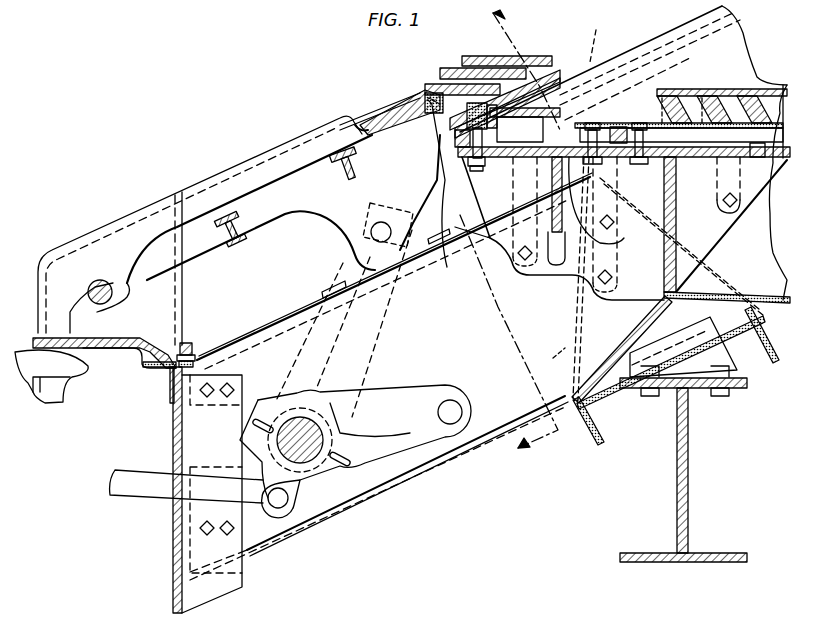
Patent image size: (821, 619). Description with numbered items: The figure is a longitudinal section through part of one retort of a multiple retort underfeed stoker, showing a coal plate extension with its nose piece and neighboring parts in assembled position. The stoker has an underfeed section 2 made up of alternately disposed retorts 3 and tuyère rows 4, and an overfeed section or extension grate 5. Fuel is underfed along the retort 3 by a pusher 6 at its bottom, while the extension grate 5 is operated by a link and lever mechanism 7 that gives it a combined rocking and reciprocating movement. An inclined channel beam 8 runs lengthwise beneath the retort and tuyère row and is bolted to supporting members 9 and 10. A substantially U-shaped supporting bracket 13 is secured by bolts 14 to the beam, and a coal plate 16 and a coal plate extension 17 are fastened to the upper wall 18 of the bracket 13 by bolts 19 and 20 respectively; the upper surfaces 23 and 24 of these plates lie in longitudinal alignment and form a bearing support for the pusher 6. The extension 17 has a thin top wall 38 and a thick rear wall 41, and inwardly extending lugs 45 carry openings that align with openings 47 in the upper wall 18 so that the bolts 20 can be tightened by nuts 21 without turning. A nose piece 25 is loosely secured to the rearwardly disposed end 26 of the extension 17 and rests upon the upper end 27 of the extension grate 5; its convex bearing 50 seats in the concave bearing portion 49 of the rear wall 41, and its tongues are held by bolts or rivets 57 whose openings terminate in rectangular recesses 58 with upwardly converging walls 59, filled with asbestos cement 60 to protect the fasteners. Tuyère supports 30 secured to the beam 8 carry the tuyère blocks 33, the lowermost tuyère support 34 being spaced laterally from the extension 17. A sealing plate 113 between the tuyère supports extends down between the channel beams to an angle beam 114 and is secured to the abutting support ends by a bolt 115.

The underfeed section 2 is at (708, 18).
The retort 3 is at (745, 58).
The tuyère row 4 is at (500, 56).
The extension grate 5 is at (181, 192).
The pusher 6 is at (752, 88).
The link and lever mechanism 7 is at (378, 400).
The inclined channel beam 8 is at (490, 432).
The supporting member 9 is at (175, 603).
The supporting member 10 is at (688, 440).
The U-shaped supporting bracket 13 is at (478, 245).
The bolt 14 is at (605, 283).
The coal plate 16 is at (634, 123).
The coal plate extension 17 is at (516, 96).
The upper wall 18 is at (550, 200).
The bolt 19 is at (642, 164).
The bolt 20 is at (482, 162).
The nut 21 is at (478, 172).
The upper surface 23 is at (672, 92).
The upper surface 24 is at (582, 124).
The nose piece 25 is at (395, 108).
The rearwardly disposed end 26 is at (425, 140).
The upper end 27 is at (352, 122).
The tuyère support 30 is at (606, 62).
The tuyère block 33 is at (465, 68).
The lowermost tuyère support 34 is at (555, 60).
The top wall 38 is at (525, 125).
The rear wall 41 is at (447, 258).
The lug 45 is at (505, 124).
The opening 47 is at (445, 200).
The concave bearing portion 49 is at (355, 148).
The convex bearing 50 is at (425, 96).
The bolt or rivet 57 is at (437, 165).
The recess 58 is at (432, 100).
The converging wall 59 is at (428, 100).
The asbestos cement 60 is at (430, 98).
The sealing plate 113 is at (646, 204).
The angle beam 114 is at (590, 440).
The bolt 115 is at (627, 88).